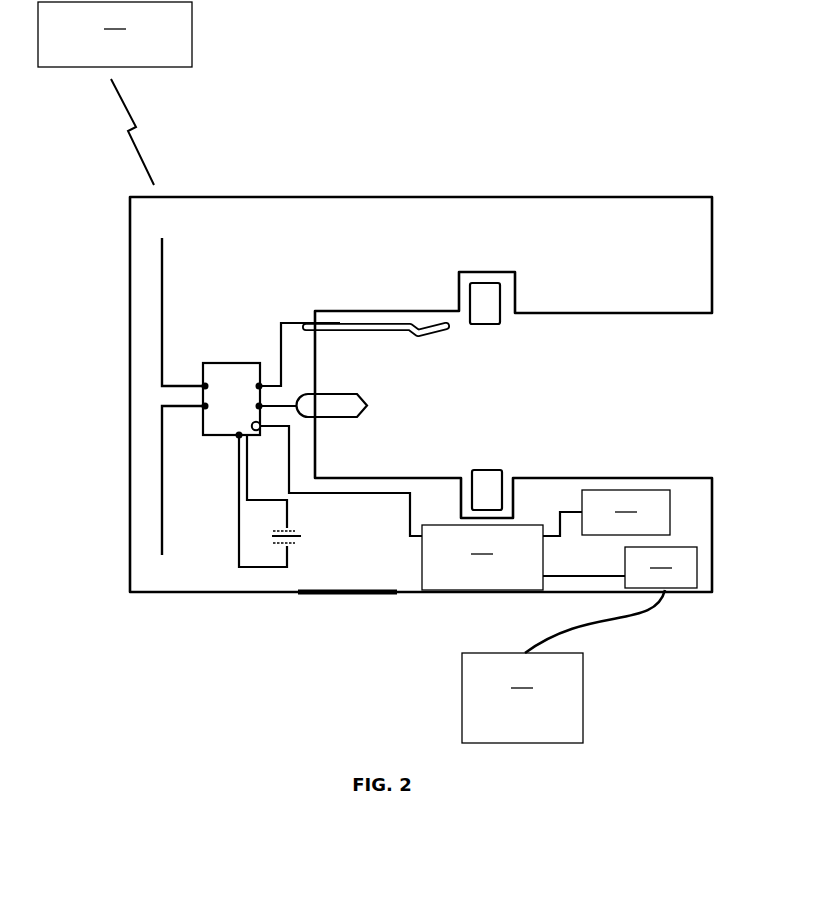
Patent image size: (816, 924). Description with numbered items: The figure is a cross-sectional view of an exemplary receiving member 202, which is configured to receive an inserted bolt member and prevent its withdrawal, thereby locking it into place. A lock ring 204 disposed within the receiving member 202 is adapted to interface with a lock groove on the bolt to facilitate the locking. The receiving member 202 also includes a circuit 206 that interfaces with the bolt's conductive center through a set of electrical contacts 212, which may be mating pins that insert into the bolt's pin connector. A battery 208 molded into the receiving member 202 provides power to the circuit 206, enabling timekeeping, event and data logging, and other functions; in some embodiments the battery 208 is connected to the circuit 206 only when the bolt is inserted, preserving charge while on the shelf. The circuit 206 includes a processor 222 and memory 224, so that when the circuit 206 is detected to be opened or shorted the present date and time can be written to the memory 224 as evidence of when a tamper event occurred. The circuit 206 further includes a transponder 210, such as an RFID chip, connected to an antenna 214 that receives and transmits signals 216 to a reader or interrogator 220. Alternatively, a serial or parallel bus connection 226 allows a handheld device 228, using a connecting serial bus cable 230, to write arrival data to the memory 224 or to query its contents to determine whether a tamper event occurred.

The receiving member 202 is at (664, 115).
The lock ring 204 is at (489, 457).
The circuit 206 is at (295, 318).
The battery 208 is at (304, 561).
The transponder 210 is at (233, 362).
The electrical contacts 212 is at (378, 405).
The antenna 214 is at (150, 485).
The signals 216 is at (110, 142).
The interrogator 220 is at (115, 34).
The processor 222 is at (482, 557).
The memory 224 is at (606, 513).
The bus connection 226 is at (620, 567).
The handheld device 228 is at (522, 698).
The serial bus cable 230 is at (634, 626).